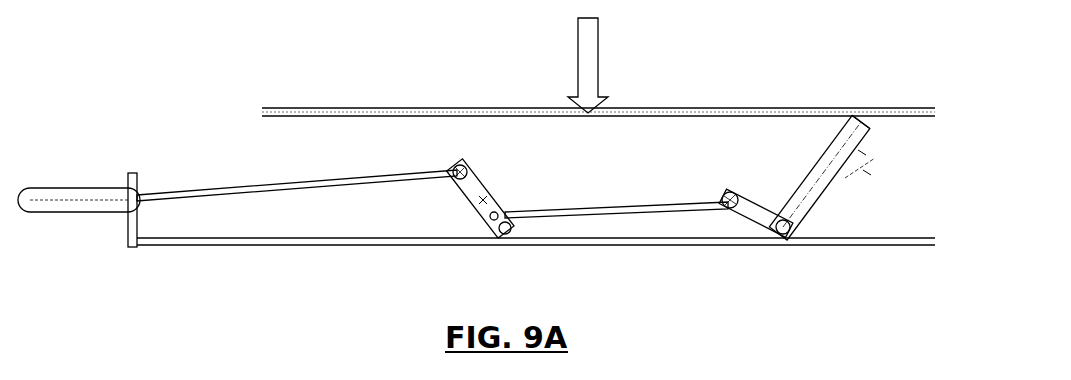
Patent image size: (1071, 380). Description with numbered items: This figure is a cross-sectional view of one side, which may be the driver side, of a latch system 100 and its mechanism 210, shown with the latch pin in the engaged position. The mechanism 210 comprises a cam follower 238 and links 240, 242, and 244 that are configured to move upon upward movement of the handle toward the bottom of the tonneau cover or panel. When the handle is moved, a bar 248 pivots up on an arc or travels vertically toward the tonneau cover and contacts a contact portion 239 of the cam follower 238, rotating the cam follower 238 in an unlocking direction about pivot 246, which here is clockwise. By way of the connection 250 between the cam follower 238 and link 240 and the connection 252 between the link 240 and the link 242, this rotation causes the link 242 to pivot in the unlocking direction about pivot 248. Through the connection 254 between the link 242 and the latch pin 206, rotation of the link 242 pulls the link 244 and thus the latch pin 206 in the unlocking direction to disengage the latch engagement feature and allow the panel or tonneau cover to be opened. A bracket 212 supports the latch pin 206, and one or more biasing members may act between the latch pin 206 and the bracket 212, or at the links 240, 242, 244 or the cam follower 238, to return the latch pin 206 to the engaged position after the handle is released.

The latch system 100 is at (251, 44).
The mechanism 210 is at (220, 130).
The latch pin 206 is at (72, 205).
The bracket 212 is at (130, 223).
The link 244 is at (285, 190).
The link 242 is at (478, 197).
The connection 254 is at (461, 166).
The connection 252 is at (492, 215).
The bar 248 is at (655, 113).
The link 240 is at (628, 207).
The connection 250 is at (733, 205).
The pivot 246 is at (783, 230).
The cam follower 238 is at (829, 158).
The contact portion 239 is at (858, 124).